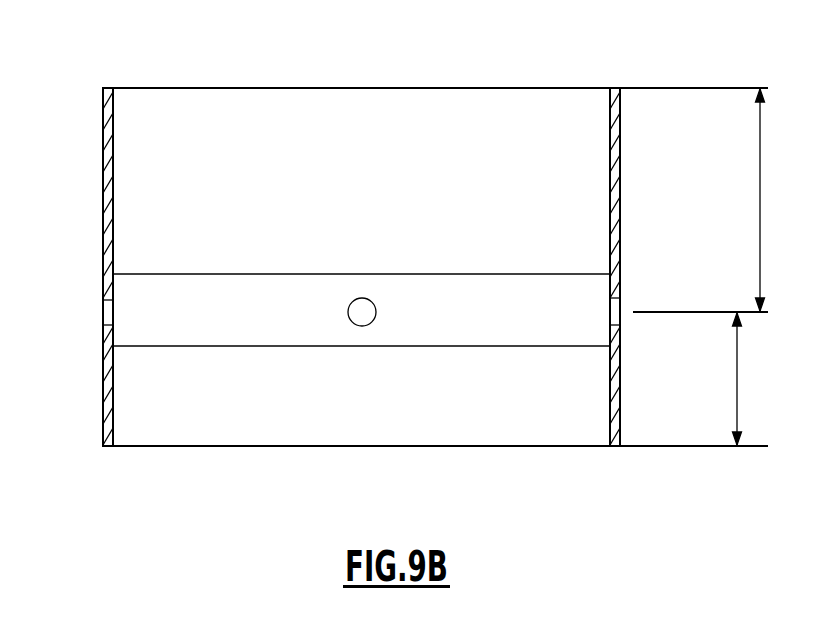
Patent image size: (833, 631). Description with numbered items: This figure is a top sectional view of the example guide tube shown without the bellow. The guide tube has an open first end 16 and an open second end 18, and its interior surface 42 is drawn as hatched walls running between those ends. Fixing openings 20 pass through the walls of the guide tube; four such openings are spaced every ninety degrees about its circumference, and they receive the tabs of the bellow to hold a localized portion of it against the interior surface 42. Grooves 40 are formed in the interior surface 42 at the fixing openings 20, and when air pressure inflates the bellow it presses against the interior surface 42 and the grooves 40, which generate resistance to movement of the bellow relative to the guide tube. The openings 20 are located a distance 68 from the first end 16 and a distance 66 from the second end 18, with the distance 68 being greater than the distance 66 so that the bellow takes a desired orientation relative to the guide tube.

The first end 16 is at (618, 87).
The second end 18 is at (618, 448).
The fixing openings 20 is at (362, 317).
The grooves 40 is at (456, 271).
The interior surface 42 is at (115, 220).
The distance 66 is at (738, 380).
The distance 68 is at (761, 197).